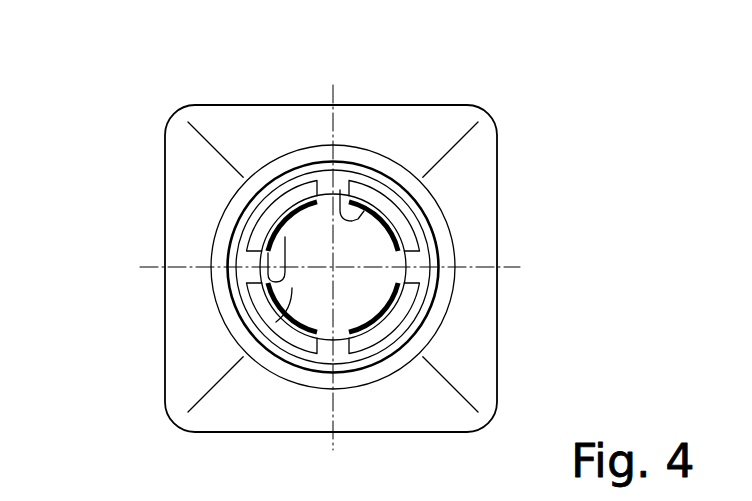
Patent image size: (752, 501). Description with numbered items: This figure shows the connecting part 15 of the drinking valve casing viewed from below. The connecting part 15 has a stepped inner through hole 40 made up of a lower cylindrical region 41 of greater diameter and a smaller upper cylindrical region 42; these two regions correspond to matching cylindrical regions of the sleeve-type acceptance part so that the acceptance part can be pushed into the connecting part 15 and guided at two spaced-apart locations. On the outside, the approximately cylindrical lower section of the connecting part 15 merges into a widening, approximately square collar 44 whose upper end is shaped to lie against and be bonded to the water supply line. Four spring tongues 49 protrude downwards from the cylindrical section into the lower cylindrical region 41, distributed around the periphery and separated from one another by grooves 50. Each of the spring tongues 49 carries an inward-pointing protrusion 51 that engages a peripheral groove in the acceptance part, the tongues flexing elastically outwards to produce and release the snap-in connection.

The connecting part 15 is at (522, 244).
The inner through hole 40 is at (273, 333).
The lower cylindrical region 41 is at (243, 198).
The upper cylindrical region 42 is at (318, 200).
The square collar 44 is at (183, 342).
The spring tongues 49 is at (284, 208).
The grooves 50 is at (383, 205).
The protrusions 51 is at (247, 262).